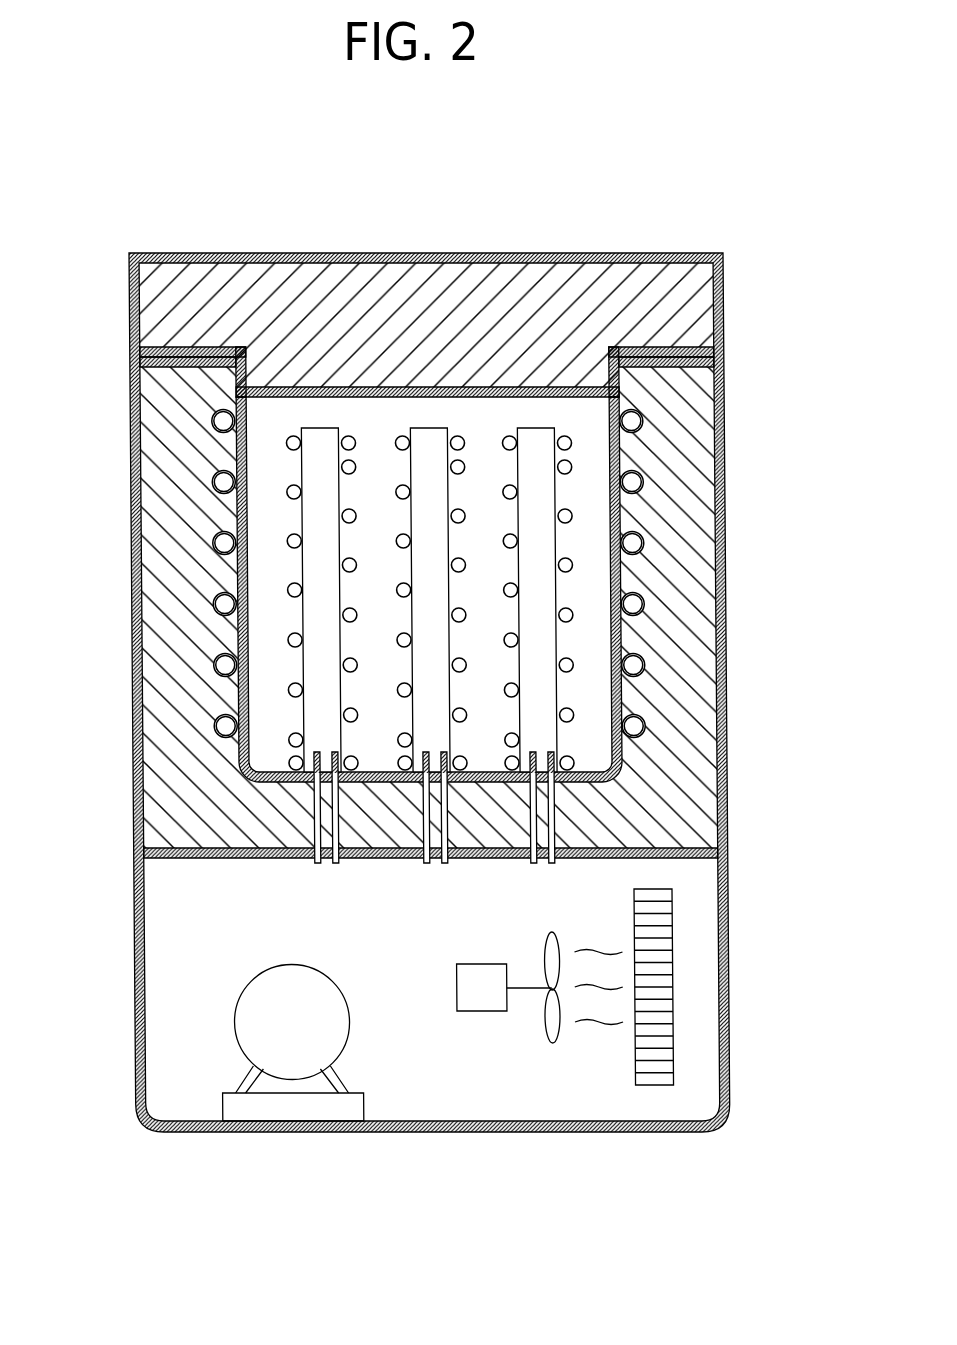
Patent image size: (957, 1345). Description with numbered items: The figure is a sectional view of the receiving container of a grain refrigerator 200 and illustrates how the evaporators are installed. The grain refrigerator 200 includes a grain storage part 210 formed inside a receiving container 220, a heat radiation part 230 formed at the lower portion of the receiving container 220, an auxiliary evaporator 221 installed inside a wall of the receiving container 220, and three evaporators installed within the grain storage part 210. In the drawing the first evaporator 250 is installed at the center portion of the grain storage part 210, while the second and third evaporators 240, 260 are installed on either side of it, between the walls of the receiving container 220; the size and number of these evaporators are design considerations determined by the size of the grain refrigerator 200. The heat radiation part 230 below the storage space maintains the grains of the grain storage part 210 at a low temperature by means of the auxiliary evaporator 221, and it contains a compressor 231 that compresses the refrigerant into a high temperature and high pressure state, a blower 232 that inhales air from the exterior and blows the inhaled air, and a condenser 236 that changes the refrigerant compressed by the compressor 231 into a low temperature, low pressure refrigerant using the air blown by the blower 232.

The grain refrigerator 200 is at (742, 213).
The grain storage part 210 is at (587, 453).
The receiving container 220 is at (745, 568).
The auxiliary evaporator 221 is at (643, 665).
The heat radiation part 230 is at (741, 917).
The compressor 231 is at (242, 1025).
The blower 232 is at (526, 1002).
The condenser 236 is at (661, 988).
The second evaporator 240 is at (314, 417).
The first evaporator 250 is at (425, 417).
The third evaporator 260 is at (532, 417).